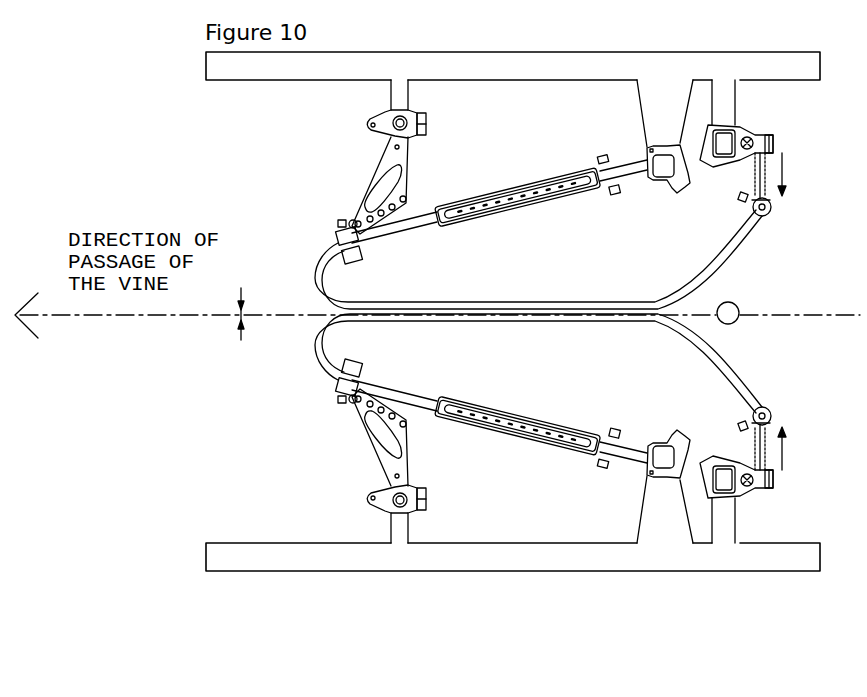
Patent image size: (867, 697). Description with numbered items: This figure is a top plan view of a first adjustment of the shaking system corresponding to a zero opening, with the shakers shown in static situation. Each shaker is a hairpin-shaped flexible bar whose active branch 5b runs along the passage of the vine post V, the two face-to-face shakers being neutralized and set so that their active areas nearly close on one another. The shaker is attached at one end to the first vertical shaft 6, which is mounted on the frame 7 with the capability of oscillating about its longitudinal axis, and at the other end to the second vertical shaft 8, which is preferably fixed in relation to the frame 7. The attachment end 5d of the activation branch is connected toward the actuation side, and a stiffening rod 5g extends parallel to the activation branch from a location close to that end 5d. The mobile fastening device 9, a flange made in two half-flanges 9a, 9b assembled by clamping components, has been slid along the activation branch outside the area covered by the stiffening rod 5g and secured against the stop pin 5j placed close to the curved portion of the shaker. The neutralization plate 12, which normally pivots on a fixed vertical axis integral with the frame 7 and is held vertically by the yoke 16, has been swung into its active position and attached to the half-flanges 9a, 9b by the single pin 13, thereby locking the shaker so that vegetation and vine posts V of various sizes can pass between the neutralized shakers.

The stop pin 5j is at (331, 239).
The mobile fastening device 9 is at (296, 387).
The half-flange 9a is at (328, 387).
The half-flange 9b is at (345, 395).
The active branch 5b is at (433, 318).
The stiffening rod 5g is at (557, 423).
The first vertical shaft 6 is at (660, 443).
The attachment end of activation branch 5d is at (637, 460).
The pin 13 is at (350, 408).
The neutralization plate 12 is at (372, 457).
The yoke 16 is at (412, 507).
The frame 7 is at (272, 560).
The second vertical shaft 8 is at (722, 490).
The vine post V is at (738, 306).